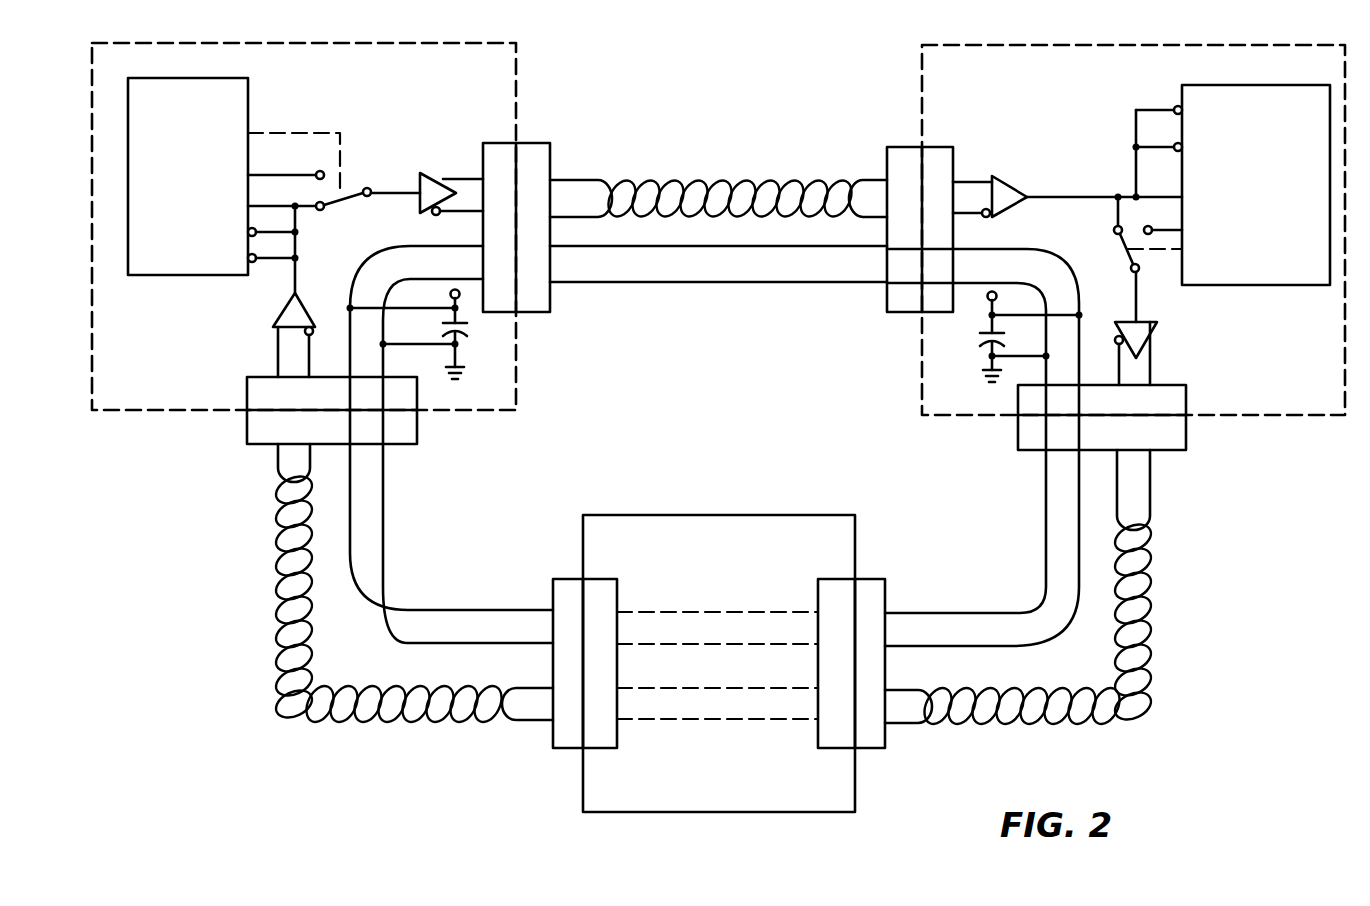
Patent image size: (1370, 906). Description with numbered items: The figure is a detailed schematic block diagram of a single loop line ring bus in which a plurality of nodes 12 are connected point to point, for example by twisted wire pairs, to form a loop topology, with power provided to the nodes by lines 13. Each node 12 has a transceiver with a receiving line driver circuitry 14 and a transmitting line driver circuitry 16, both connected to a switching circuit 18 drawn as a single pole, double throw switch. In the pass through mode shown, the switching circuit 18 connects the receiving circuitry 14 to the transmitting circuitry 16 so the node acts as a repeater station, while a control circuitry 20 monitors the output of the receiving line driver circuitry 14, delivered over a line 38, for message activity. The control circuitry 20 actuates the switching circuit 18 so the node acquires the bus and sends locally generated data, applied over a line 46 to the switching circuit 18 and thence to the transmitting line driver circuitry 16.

The node 12 is at (517, 108).
The lines 13 is at (705, 283).
The receiving line driver circuitry 14 is at (290, 312).
The transmitting line driver circuitry 16 is at (448, 177).
The switching circuit 18 is at (338, 203).
The control circuitry 20 is at (249, 104).
The line 38 is at (298, 248).
The line 46 is at (310, 172).